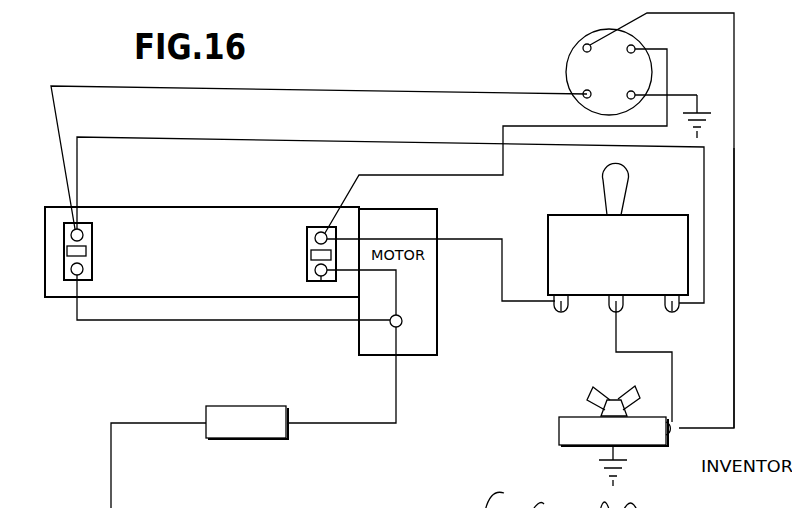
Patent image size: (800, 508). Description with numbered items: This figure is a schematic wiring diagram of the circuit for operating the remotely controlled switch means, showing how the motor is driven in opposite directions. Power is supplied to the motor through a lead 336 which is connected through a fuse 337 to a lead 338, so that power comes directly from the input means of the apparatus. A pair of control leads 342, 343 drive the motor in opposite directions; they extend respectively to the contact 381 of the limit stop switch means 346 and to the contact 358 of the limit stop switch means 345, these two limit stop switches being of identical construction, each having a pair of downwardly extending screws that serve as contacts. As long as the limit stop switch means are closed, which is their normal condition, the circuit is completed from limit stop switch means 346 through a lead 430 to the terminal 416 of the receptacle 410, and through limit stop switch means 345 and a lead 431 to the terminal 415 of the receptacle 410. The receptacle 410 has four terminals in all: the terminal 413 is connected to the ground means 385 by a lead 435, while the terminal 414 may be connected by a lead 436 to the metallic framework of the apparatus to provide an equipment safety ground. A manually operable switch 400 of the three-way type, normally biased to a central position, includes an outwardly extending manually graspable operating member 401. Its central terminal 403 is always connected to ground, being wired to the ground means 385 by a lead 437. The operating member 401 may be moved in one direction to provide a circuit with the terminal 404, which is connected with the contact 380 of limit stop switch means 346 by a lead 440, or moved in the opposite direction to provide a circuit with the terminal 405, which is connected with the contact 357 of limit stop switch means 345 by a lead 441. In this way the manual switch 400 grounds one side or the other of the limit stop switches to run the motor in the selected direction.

The limit stop switch 345 is at (67, 251).
The screw 357 is at (72, 235).
The screw 358 is at (75, 278).
The screw 380 is at (322, 227).
The limit stop switch 346 is at (311, 256).
The screw 381 is at (323, 284).
The control lead 342 is at (400, 317).
The control lead 343 is at (236, 327).
The lead 336 is at (397, 410).
The fuse 337 is at (289, 393).
The lead 338 is at (112, 462).
The lead 431 is at (338, 90).
The lead 441 is at (351, 142).
The lead 430 is at (450, 180).
The lead 440 is at (503, 257).
The manually operable switch 400 is at (568, 192).
The operating member 401 is at (629, 188).
The terminal 403 is at (613, 316).
The terminal 404 is at (563, 316).
The terminal 405 is at (676, 316).
The lead 437 is at (673, 373).
The receptacle 410 is at (580, 36).
The terminal 413 is at (578, 58).
The terminal 416 is at (636, 48).
The terminal 415 is at (586, 102).
The terminal 414 is at (628, 102).
The lead 436 is at (702, 110).
The lead 435 is at (735, 156).
The ground means 385 is at (556, 438).